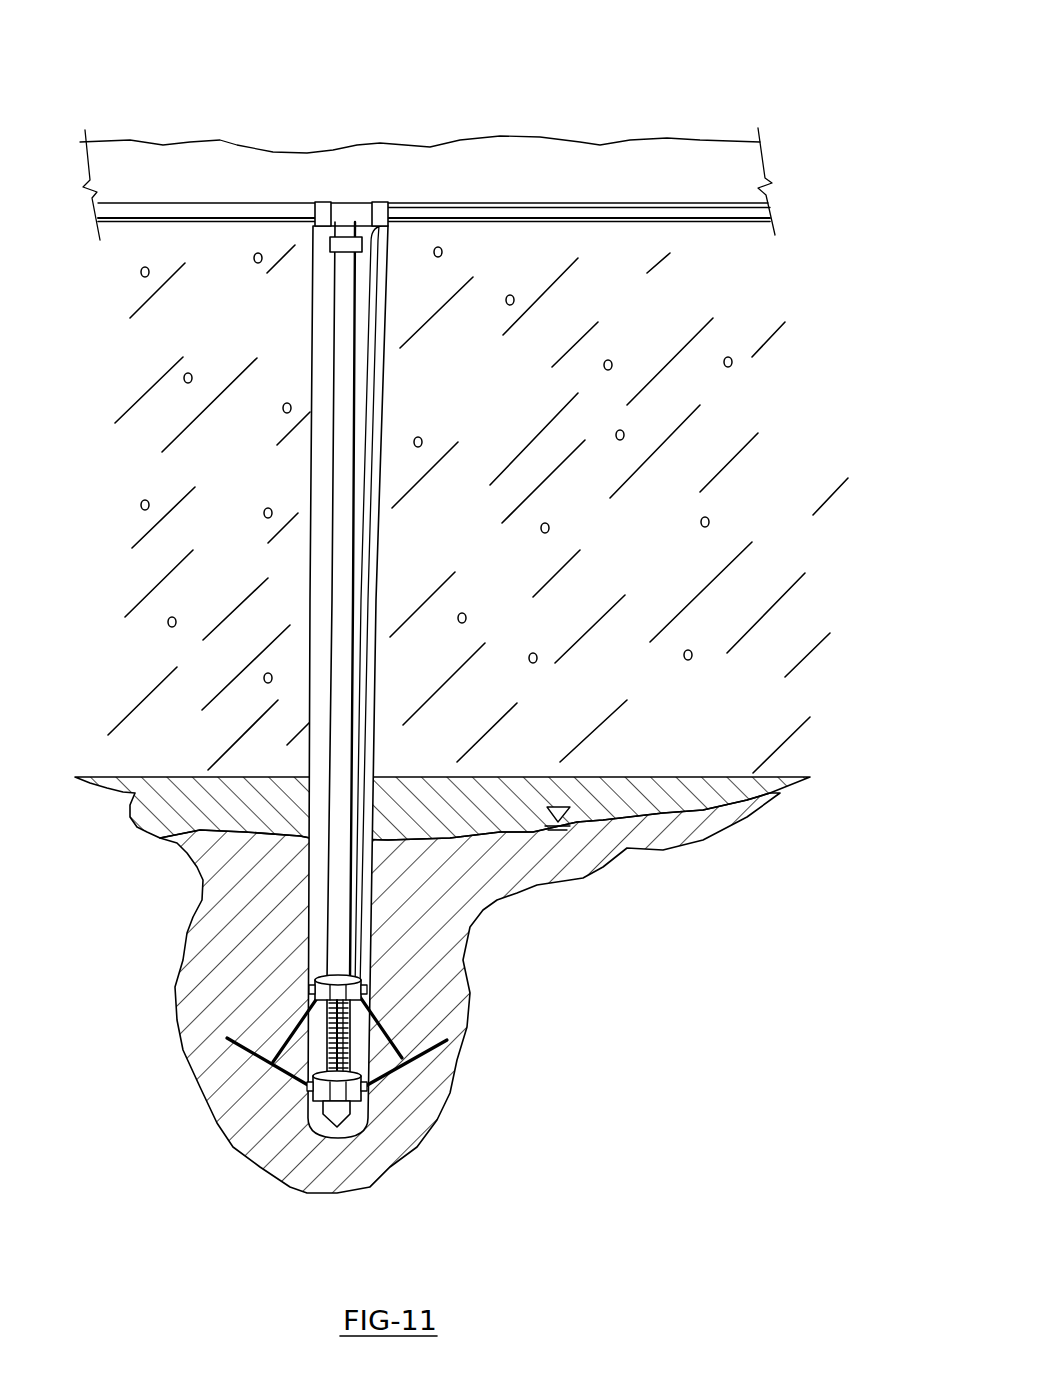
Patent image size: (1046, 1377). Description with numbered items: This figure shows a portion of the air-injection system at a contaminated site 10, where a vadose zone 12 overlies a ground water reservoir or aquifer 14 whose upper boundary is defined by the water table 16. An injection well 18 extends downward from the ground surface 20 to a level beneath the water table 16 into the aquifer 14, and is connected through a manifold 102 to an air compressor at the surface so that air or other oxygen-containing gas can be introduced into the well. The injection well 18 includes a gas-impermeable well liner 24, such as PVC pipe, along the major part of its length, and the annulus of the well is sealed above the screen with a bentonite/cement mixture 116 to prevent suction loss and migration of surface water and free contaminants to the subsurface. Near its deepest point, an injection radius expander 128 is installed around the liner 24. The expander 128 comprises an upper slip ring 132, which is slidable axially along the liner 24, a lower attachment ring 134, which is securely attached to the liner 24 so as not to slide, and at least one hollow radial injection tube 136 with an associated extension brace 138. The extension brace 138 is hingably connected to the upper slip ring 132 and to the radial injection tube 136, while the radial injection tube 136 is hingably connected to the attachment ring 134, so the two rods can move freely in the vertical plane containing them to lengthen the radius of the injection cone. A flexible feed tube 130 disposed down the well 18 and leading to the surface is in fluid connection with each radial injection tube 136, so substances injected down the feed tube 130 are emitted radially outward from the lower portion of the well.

The contaminated site 10 is at (645, 85).
The vadose zone 12 is at (658, 563).
The ground water reservoir or aquifer 14 is at (497, 888).
The water table 16 is at (667, 775).
The injection well 18 is at (308, 578).
The ground surface 20 is at (452, 137).
The well liner 24 is at (345, 488).
The manifold 102 is at (660, 213).
The bentonite/cement mixture 116 is at (328, 323).
The injection radius expander 128 is at (480, 1074).
The flexible feed tube 130 is at (665, 200).
The upper slip ring 132 is at (330, 1000).
The lower attachment ring 134 is at (320, 1100).
The radial injection tube 136 is at (312, 1083).
The extension brace 138 is at (398, 1022).